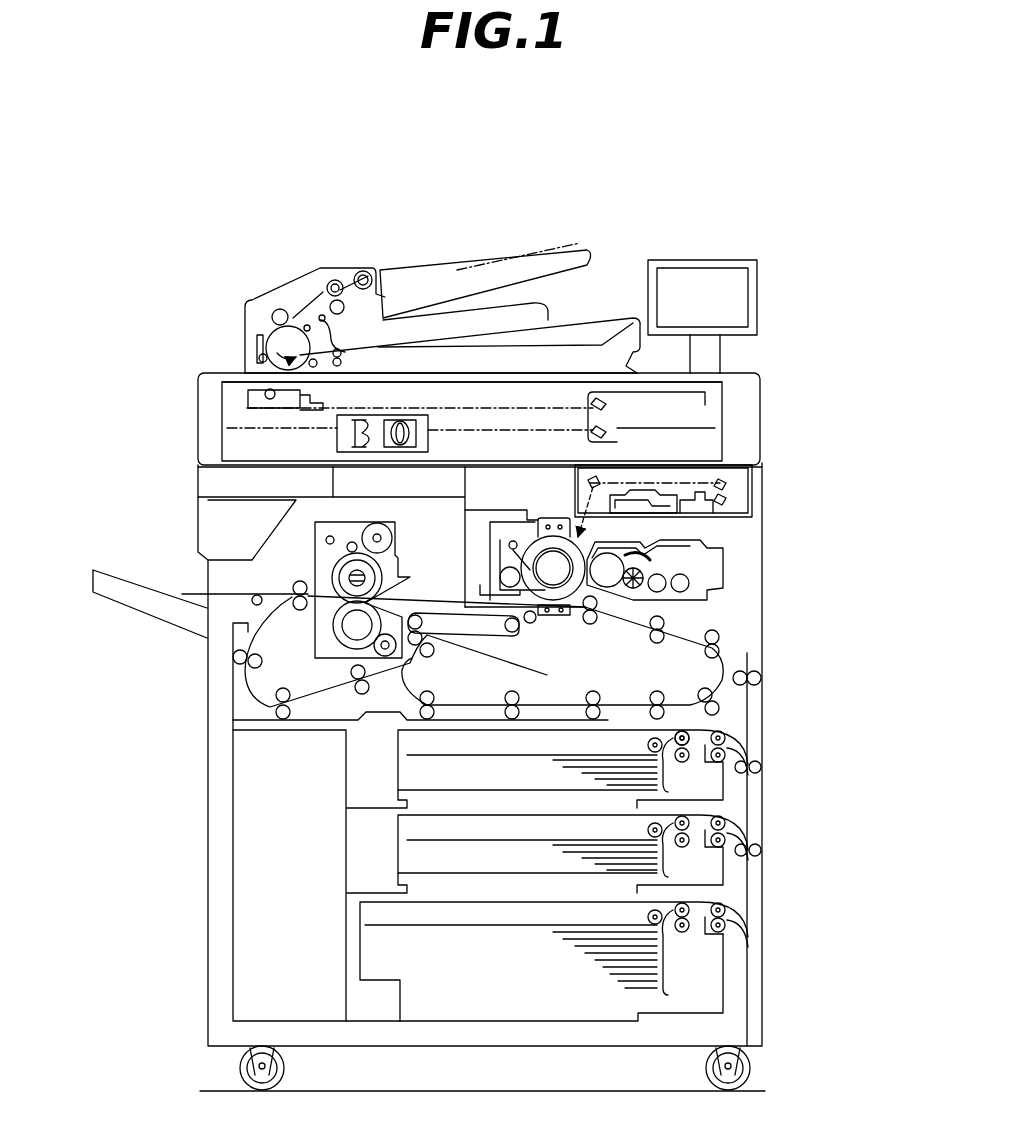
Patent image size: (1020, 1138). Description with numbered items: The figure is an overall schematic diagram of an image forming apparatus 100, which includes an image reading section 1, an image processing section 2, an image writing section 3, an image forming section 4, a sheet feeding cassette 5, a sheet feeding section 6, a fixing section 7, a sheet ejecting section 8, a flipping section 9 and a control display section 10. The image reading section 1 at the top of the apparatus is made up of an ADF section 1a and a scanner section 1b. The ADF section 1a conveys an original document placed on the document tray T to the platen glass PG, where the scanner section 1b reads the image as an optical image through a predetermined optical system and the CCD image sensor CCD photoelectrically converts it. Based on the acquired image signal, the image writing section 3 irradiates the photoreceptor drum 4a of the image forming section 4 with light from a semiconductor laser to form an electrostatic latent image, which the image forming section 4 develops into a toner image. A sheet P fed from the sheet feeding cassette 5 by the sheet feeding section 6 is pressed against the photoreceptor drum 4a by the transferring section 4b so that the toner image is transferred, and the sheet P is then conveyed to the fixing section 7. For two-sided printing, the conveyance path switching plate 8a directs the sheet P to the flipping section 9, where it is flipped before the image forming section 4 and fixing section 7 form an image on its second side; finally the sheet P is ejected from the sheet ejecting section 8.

The image forming apparatus 100 is at (428, 208).
The image reading section 1 is at (203, 277).
The ADF section 1a is at (255, 330).
The scanner section 1b is at (210, 400).
The document tray T is at (577, 263).
The control display section 10 is at (758, 283).
The platen glass PG is at (670, 375).
The CCD image sensor CCD is at (355, 432).
The image processing section 2 is at (288, 478).
The image writing section 3 is at (738, 487).
The image forming section 4 is at (642, 537).
The photoreceptor drum 4a is at (548, 555).
The transferring section 4b is at (557, 615).
The fixing section 7 is at (398, 553).
The sheet ejecting section 8 is at (213, 575).
The conveyance path switching plate 8a is at (250, 620).
The flipping section 9 is at (453, 645).
The sheet feeding cassette 5 is at (398, 742).
The sheet P is at (418, 757).
The sheet feeding section 6 is at (698, 735).